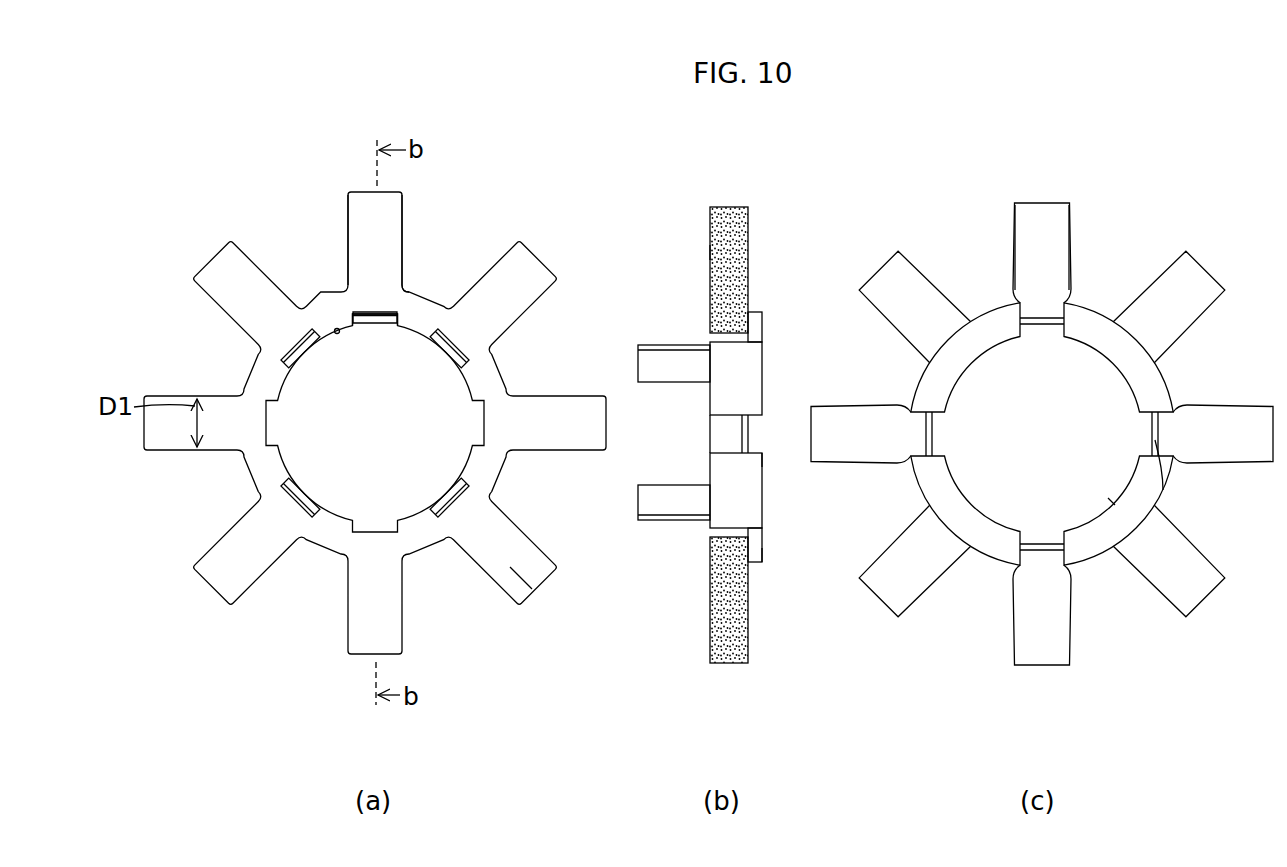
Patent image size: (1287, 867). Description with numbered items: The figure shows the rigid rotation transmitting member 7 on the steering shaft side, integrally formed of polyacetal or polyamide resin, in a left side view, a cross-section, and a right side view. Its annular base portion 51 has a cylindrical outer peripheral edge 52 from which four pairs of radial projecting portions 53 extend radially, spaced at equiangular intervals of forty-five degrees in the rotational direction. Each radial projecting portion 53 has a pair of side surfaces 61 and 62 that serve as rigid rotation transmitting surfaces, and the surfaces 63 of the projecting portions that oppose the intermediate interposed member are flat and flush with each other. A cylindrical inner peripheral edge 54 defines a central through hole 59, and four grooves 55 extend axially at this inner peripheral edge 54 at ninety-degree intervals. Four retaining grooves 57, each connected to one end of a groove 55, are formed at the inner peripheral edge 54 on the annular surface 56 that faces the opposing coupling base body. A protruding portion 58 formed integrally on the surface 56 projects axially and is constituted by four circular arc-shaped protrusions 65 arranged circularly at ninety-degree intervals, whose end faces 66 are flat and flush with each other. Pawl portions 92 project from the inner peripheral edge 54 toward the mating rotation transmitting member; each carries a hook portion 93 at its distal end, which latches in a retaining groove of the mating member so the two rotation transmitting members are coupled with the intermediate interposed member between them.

The rotation transmitting member 7 is at (711, 454).
The annular base portion 51 is at (598, 487).
The cylindrical outer peripheral edge 52 is at (830, 388).
The radial projecting portion 53 is at (709, 439).
The cylindrical inner peripheral edge 54 is at (716, 429).
The groove 55 is at (710, 428).
The annular surface 56 is at (934, 389).
The retaining groove 57 is at (983, 427).
The protruding portion 58 is at (858, 427).
The through hole 59 is at (711, 428).
The side surface 61 is at (735, 231).
The side surface 62 is at (704, 233).
The surface 63 is at (610, 414).
The circular arc-shaped protrusion 65 is at (983, 405).
The end face 66 is at (877, 432).
The pawl portion 92 is at (454, 394).
The hook portion 93 is at (486, 415).